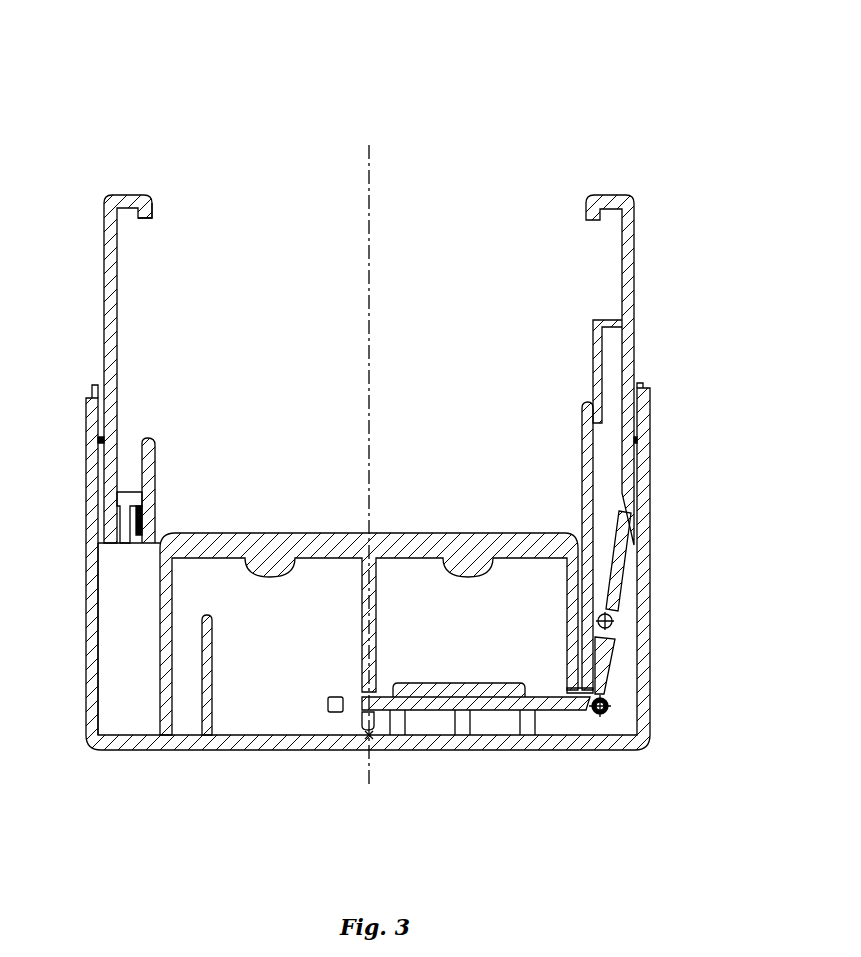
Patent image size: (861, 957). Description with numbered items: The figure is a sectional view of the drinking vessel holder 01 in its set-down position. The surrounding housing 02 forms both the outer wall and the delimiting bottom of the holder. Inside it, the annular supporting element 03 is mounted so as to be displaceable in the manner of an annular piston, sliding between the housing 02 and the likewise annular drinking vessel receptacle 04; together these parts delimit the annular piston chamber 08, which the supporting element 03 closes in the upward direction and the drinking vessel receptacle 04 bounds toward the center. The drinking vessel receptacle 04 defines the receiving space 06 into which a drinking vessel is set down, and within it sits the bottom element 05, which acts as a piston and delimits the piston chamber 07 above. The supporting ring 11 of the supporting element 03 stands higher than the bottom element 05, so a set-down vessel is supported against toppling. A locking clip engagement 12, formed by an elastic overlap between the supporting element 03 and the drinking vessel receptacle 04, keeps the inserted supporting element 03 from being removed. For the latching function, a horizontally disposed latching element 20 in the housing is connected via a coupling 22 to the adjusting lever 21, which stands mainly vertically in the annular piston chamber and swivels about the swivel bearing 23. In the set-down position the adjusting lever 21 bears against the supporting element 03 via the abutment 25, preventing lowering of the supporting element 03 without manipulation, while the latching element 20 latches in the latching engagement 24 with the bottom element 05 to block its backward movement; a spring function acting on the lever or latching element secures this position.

The drinking vessel holder 01 is at (96, 66).
The housing 02 is at (230, 742).
The supporting element 03 is at (110, 358).
The drinking vessel receptacle 04 is at (582, 458).
The bottom element 05 is at (405, 545).
The receiving space 06 is at (337, 465).
The piston chamber 07 is at (272, 675).
The annular piston chamber 08 is at (118, 639).
The supporting ring 11 is at (155, 213).
The locking clip engagement 12 is at (132, 472).
The latching element 20 is at (503, 706).
The adjusting lever 21 is at (607, 650).
The coupling 22 is at (596, 714).
The swivel bearing 23 is at (610, 620).
The latching engagement 24 is at (355, 718).
The abutment 25 is at (672, 510).